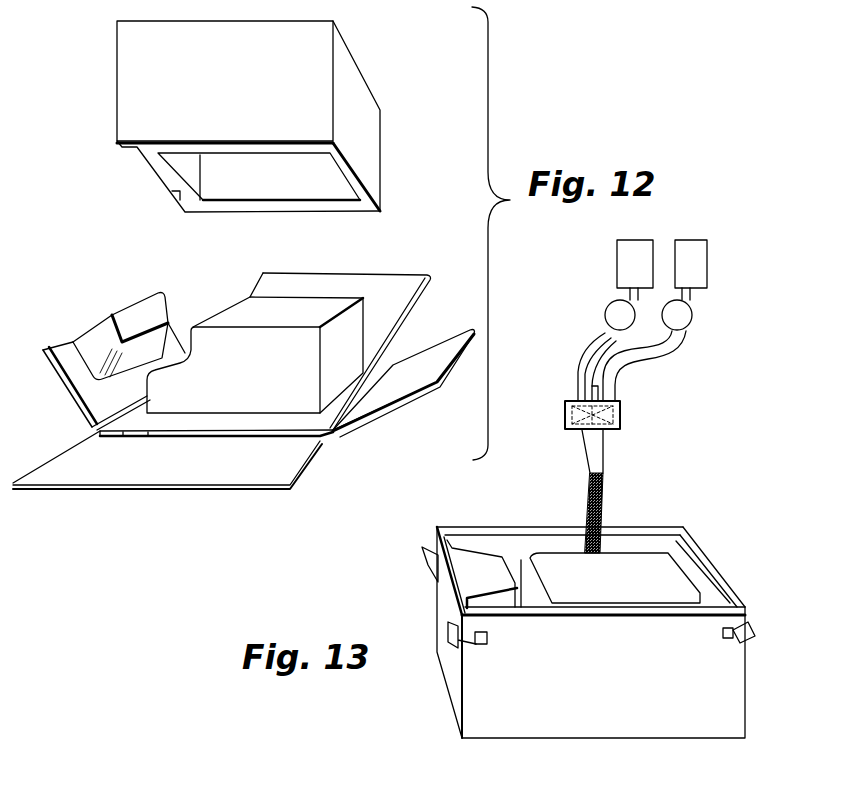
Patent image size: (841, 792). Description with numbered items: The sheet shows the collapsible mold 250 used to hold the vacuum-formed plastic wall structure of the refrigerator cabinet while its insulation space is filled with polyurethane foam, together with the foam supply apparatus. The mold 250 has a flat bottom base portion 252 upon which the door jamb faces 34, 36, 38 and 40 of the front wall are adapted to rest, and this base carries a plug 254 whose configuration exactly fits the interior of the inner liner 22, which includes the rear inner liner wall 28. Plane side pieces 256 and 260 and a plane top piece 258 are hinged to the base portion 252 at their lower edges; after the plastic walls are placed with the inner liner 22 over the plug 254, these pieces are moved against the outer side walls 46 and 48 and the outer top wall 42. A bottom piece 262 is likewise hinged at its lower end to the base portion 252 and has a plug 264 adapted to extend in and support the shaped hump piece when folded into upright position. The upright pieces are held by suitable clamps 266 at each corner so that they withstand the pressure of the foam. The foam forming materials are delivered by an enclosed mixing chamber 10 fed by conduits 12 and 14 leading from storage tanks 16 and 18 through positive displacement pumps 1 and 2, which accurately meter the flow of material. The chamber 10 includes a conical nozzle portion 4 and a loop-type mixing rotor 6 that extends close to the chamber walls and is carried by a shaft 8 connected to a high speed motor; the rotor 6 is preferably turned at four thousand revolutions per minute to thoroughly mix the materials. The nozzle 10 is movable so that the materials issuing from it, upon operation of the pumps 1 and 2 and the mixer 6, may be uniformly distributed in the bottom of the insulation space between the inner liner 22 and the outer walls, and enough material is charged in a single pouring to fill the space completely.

In FIG. 13, the positive displacement pump 1 is at (605, 312).
In FIG. 13, the positive displacement pump 2 is at (695, 316).
In FIG. 13, the conical nozzle portion 4 is at (590, 475).
In FIG. 13, the loop-type mixing rotor 6 is at (622, 414).
In FIG. 13, the shaft 8 is at (590, 360).
In FIG. 13, the mixing chamber 10 is at (605, 445).
In FIG. 13, the conduit 12 is at (615, 382).
In FIG. 13, the conduit 14 is at (578, 370).
In FIG. 13, the storage tank 16 is at (630, 248).
In FIG. 13, the storage tank 18 is at (690, 250).
In FIG. 12, the inner liner 22 is at (290, 188).
In FIG. 13, the rear inner liner wall 28 is at (615, 578).
In FIG. 12, the door jamb face 34 is at (240, 147).
In FIG. 12, the door jamb face 36 is at (360, 190).
In FIG. 12, the door jamb face 38 is at (320, 205).
In FIG. 12, the door jamb face 40 is at (165, 170).
In FIG. 12, the outer top wall 42 is at (367, 142).
In FIG. 12, the outer side wall 46 is at (135, 70).
In FIG. 13, the outer side wall 48 is at (527, 548).
In FIG. 12, the collapsible mold 250 is at (332, 438).
In FIG. 12, the flat bottom base portion 252 is at (233, 420).
In FIG. 12, the plug 254 is at (255, 355).
In FIG. 12, the plane side piece 256 is at (350, 282).
In FIG. 12, the plane top piece 258 is at (387, 400).
In FIG. 13, the plane top piece 258 is at (718, 567).
In FIG. 12, the plane side piece 260 is at (153, 477).
In FIG. 13, the plane side piece 260 is at (591, 632).
In FIG. 12, the bottom piece 262 is at (85, 386).
In FIG. 13, the bottom piece 262 is at (448, 657).
In FIG. 12, the plug 264 is at (133, 318).
In FIG. 13, the plug 264 is at (463, 583).
In FIG. 13, the clamp 266 is at (423, 563).